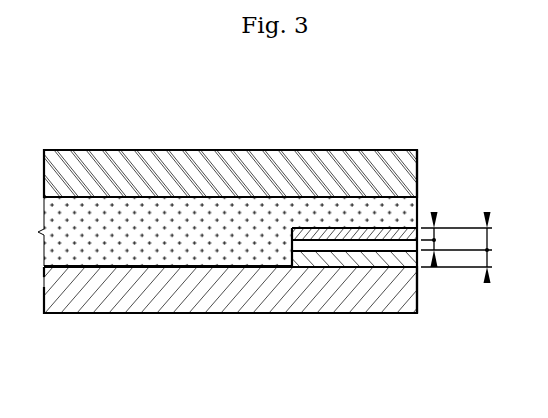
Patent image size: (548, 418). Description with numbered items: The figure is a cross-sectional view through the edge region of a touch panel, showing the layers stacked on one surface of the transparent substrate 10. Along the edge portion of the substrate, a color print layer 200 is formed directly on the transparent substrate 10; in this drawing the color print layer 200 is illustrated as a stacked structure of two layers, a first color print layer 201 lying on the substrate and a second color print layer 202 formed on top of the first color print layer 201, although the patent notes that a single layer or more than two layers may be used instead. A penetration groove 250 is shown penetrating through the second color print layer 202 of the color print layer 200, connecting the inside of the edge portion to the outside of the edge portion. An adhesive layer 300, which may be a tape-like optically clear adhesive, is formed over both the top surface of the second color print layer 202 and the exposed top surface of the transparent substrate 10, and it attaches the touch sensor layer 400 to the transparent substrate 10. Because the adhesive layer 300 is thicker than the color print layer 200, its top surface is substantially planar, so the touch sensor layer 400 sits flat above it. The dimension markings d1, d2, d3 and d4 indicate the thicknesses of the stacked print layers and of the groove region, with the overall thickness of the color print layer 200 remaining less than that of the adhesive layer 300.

The touch sensor layer 400 is at (179, 157).
The adhesive layer 300 is at (263, 212).
The transparent substrate 10 is at (209, 297).
The color print layer 200 is at (352, 275).
The first color print layer 201 is at (367, 258).
The second color print layer 202 is at (387, 235).
The penetration groove 250 is at (322, 246).
The thickness d1 is at (500, 265).
The thickness d2 is at (501, 232).
The thickness d3 is at (436, 250).
The thickness d4 is at (435, 240).